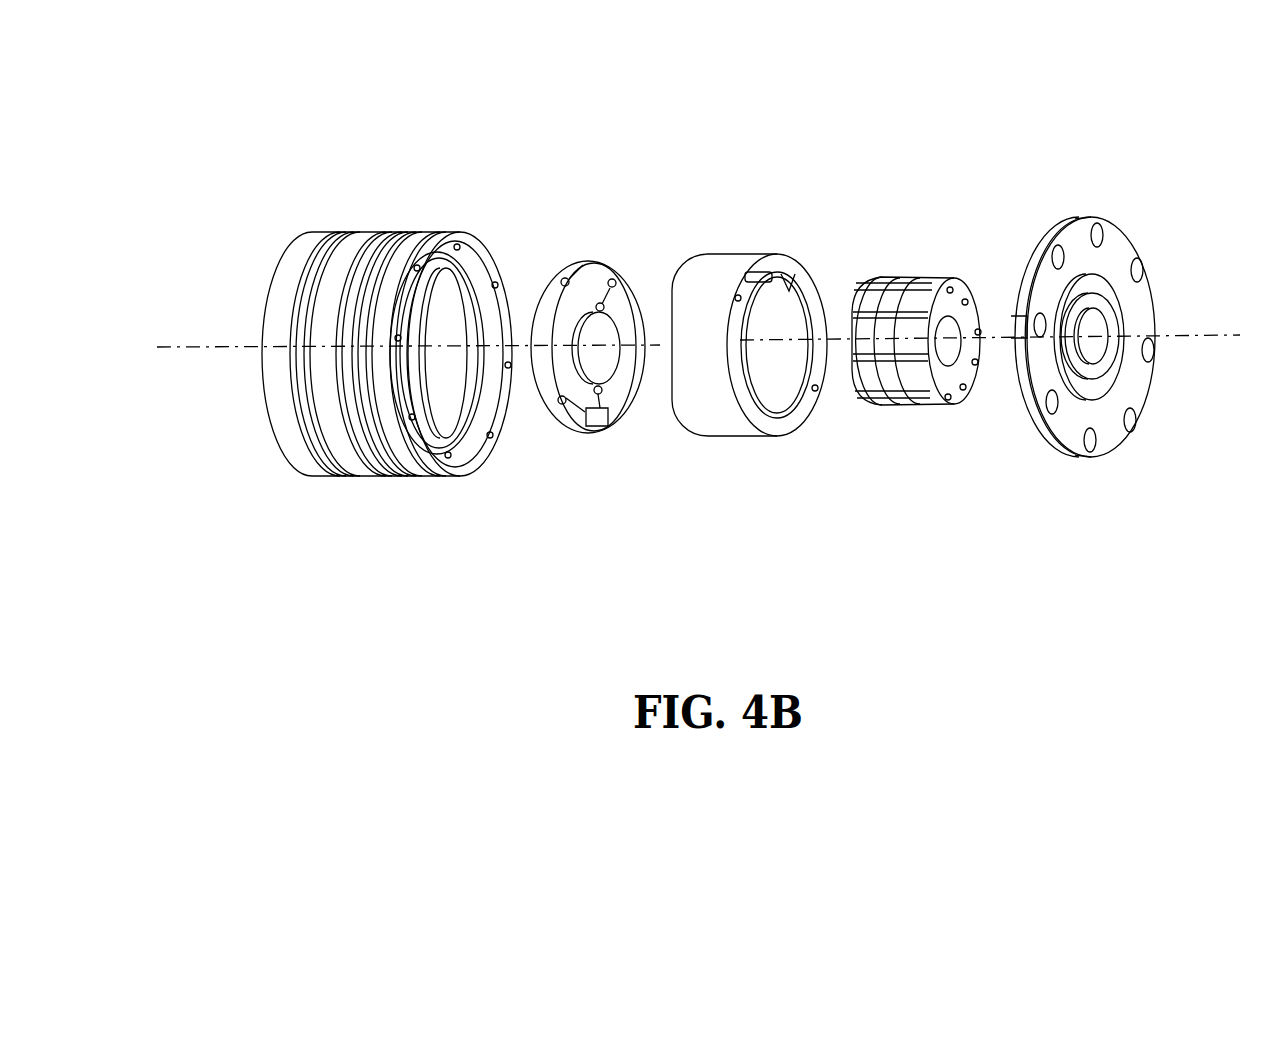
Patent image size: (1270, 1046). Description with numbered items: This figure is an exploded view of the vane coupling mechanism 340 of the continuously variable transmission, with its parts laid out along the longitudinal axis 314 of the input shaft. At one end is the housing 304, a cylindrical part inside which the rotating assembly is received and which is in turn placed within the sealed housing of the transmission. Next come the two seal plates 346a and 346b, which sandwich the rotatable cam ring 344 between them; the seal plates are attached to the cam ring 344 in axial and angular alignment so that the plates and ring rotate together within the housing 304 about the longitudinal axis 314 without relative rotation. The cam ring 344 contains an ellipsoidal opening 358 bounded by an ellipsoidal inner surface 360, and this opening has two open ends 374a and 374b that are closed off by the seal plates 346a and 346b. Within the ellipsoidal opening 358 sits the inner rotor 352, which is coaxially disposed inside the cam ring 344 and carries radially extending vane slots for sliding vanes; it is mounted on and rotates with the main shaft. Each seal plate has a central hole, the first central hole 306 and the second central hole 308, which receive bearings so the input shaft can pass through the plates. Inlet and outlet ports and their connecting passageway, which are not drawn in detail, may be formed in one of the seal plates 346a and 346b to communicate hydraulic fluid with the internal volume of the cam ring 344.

The vane coupling mechanism 340 is at (374, 84).
The housing 304 is at (420, 487).
The central hole 306 is at (614, 288).
The central hole 308 is at (1112, 253).
The longitudinal axis 314 is at (698, 296).
The rotatable cam ring 344 is at (731, 447).
The seal plate 346a is at (587, 452).
The seal plate 346b is at (1092, 478).
The inner rotor 352 is at (918, 425).
The ellipsoidal opening 358 is at (812, 300).
The ellipsoidal inner surface 360 is at (790, 292).
The open end 374a is at (773, 398).
The open end 374b is at (811, 421).